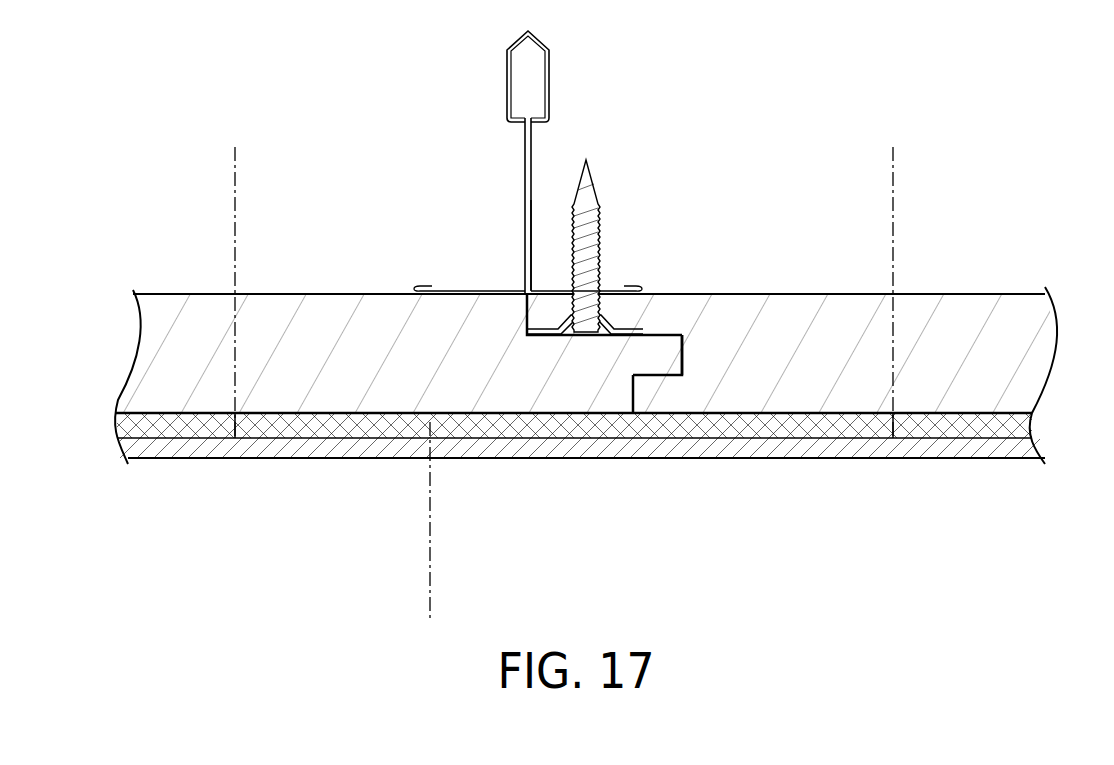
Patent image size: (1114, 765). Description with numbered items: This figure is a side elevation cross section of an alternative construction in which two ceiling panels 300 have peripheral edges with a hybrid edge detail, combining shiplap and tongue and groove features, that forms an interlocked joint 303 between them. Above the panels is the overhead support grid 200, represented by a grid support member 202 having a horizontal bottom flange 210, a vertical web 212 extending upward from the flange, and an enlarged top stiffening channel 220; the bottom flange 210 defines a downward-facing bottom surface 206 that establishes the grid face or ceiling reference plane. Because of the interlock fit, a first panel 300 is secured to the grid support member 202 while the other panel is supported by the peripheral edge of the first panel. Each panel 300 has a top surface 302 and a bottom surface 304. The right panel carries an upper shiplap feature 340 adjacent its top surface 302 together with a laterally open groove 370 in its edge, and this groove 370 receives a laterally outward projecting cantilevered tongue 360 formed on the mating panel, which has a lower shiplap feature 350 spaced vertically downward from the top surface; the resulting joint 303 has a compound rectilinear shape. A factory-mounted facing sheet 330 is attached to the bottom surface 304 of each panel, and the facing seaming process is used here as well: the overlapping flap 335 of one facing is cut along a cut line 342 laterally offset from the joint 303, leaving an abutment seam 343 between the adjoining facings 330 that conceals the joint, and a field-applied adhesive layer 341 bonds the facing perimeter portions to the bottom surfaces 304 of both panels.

The overhead support grid 200 is at (497, 259).
The grid support member 202 is at (552, 125).
The bottom surface 206 is at (440, 300).
The bottom flange 210 is at (453, 290).
The vertical web 212 is at (521, 193).
The top stiffening channel 220 is at (549, 73).
The ceiling panel 300 is at (253, 369).
The top surface 302 is at (165, 294).
The joint 303 is at (597, 188).
The bottom surface 304 is at (165, 415).
The facing sheet 330 is at (268, 448).
The flap 335 is at (553, 453).
The upper shiplap feature 340 is at (607, 307).
The adhesive layer 341 is at (634, 418).
The cut line 342 is at (430, 610).
The abutment seam 343 is at (632, 316).
The lower shiplap feature 350 is at (577, 363).
The tongue 360 is at (653, 358).
The groove 370 is at (687, 350).